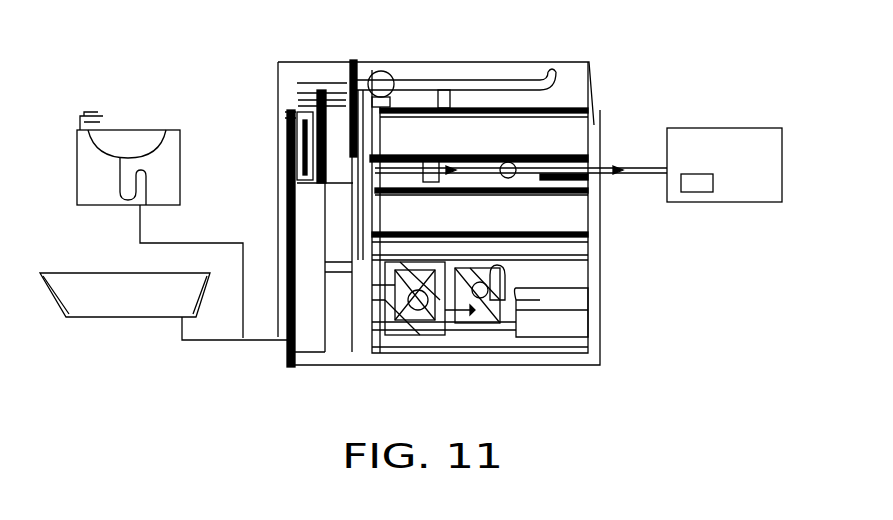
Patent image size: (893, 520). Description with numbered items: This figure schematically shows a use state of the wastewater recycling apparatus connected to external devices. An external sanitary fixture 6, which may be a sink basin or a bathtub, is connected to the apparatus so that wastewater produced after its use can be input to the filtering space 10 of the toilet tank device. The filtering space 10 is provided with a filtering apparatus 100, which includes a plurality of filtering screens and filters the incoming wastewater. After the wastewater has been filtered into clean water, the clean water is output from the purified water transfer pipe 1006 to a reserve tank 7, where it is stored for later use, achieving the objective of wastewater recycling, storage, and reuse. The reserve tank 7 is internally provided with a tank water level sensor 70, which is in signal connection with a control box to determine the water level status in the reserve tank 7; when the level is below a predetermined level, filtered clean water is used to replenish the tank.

The external sanitary fixture 6 is at (127, 130).
The reserve tank 7 is at (723, 128).
The tank water level sensor 70 is at (695, 195).
The filtering space 10 is at (280, 222).
The filtering apparatus 100 is at (303, 103).
The purified water transfer pipe 1006 is at (430, 165).